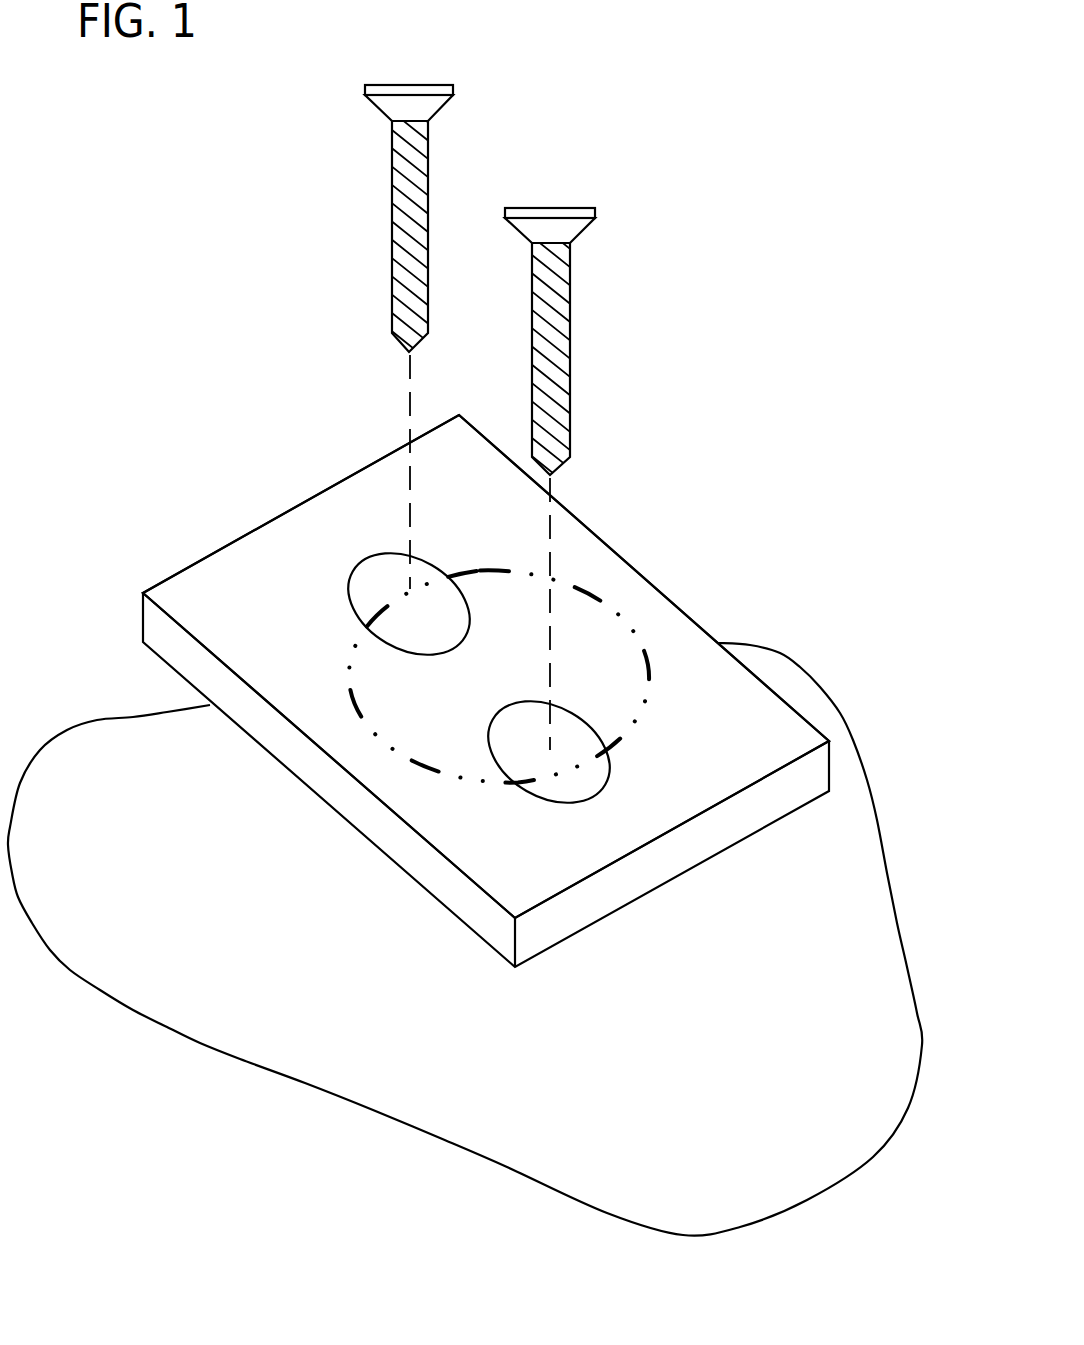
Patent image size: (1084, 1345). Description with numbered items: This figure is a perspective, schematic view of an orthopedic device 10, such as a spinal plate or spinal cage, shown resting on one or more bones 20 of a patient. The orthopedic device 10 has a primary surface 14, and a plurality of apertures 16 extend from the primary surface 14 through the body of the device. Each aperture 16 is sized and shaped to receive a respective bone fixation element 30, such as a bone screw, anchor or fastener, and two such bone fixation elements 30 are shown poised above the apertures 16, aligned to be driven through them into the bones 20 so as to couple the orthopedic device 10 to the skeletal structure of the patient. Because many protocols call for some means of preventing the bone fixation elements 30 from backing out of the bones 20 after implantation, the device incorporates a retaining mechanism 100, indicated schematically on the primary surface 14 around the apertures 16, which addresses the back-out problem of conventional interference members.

The orthopedic device 10 is at (187, 600).
The primary surface 14 is at (700, 678).
The apertures 16 is at (352, 570).
The bones 20 is at (170, 743).
The bone fixation elements 30 is at (428, 192).
The retaining mechanism 100 is at (600, 590).